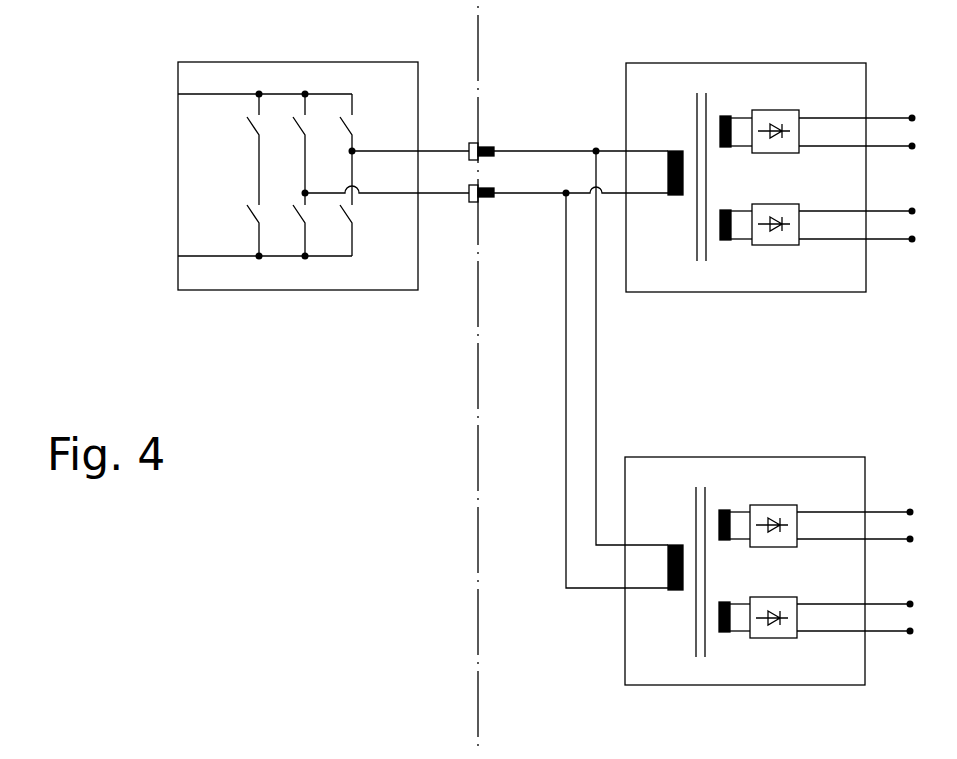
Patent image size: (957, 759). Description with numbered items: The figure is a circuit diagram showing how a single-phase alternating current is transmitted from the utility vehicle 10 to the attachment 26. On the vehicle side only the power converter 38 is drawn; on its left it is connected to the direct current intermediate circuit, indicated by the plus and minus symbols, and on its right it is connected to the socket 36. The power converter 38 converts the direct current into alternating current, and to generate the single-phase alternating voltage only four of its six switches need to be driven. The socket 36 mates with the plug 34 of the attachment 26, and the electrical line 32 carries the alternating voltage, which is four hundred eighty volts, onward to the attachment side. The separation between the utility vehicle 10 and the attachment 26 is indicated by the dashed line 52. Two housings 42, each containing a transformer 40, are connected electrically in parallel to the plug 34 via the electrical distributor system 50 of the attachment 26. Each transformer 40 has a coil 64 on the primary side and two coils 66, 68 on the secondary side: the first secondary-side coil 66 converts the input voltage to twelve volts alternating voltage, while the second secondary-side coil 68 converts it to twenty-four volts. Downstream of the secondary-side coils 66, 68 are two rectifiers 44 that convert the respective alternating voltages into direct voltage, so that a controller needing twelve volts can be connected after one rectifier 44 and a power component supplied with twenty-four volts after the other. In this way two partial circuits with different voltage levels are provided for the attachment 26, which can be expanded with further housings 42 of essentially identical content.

The utility vehicle 10 is at (307, 714).
The attachment 26 is at (952, 729).
The electrical line 32 is at (540, 198).
The plug 34 is at (493, 147).
The socket 36 is at (470, 143).
The power converter 38 is at (322, 292).
The transformer 40 is at (690, 118).
The housing 42 is at (664, 293).
The rectifier 44 is at (790, 110).
The electrical distributor system 50 is at (558, 352).
The dashed line 52 is at (477, 397).
The primary-side coil 64 is at (668, 150).
The first secondary-side coil 66 is at (726, 116).
The second secondary-side coil 68 is at (726, 240).